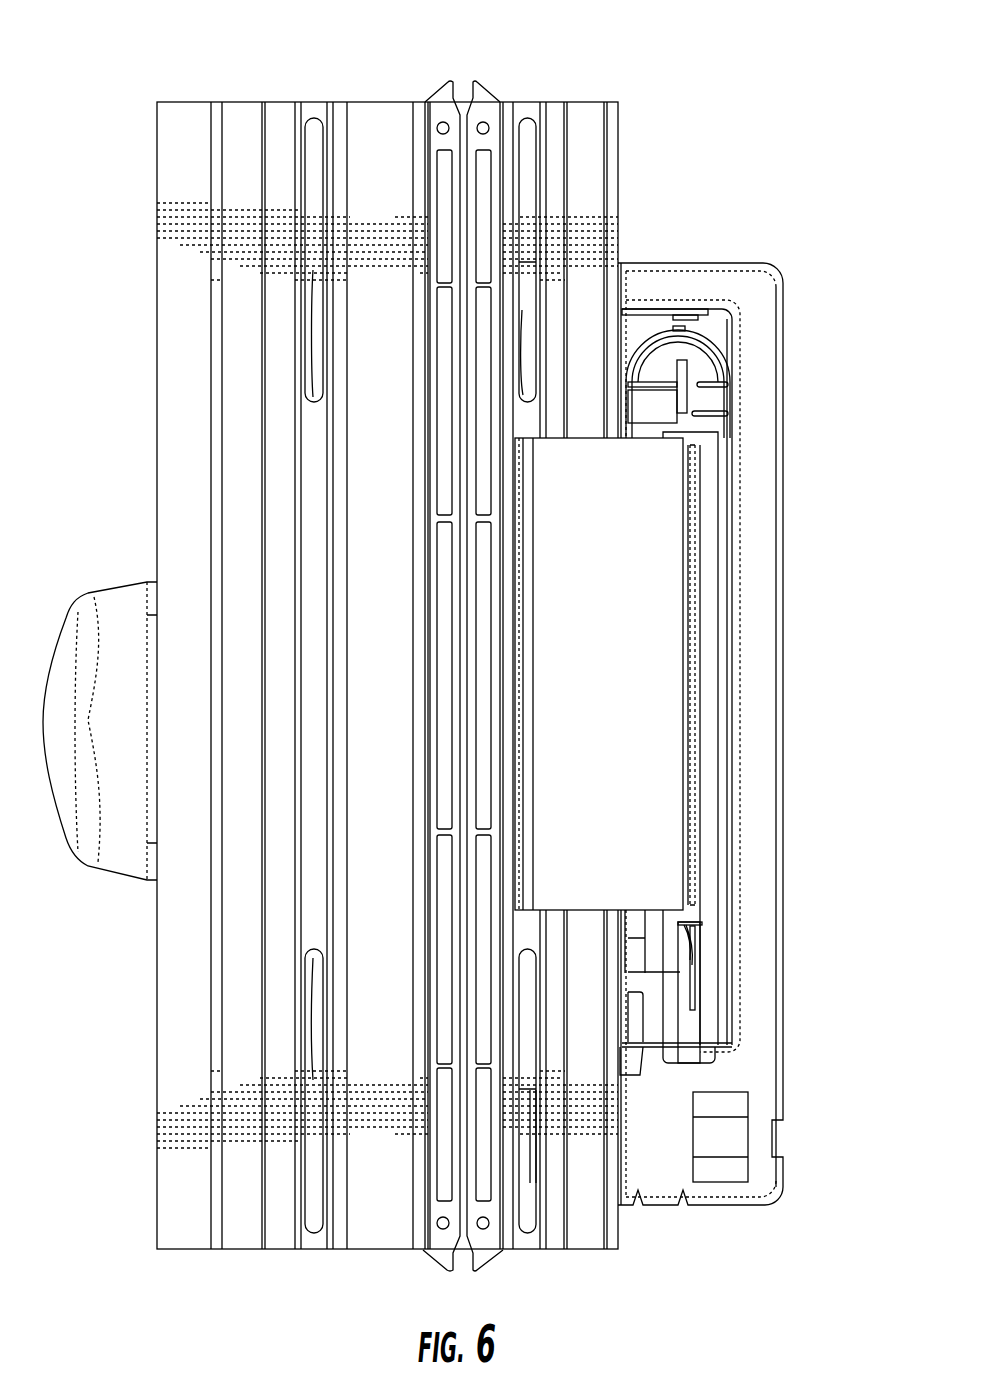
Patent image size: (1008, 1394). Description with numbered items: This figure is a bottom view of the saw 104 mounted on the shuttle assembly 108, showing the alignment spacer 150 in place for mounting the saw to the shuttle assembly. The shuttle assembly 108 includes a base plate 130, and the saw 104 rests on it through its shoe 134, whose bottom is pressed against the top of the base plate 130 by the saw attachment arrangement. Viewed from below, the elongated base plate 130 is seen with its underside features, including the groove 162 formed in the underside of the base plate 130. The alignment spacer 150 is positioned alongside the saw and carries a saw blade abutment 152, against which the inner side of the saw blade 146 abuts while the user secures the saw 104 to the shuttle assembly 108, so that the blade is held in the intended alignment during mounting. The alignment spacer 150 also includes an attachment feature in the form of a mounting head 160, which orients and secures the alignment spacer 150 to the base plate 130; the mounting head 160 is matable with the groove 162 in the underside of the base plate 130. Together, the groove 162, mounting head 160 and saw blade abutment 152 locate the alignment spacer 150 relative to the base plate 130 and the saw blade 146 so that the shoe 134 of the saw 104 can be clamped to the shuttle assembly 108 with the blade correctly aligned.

The shuttle assembly 108 is at (272, 78).
The groove 162 is at (533, 108).
The base plate 130 is at (592, 165).
The saw 104 is at (751, 283).
The shoe 134 is at (768, 695).
The alignment spacer 150 is at (585, 472).
The mounting head 160 is at (528, 522).
The saw blade abutment 152 is at (692, 563).
The saw blade 146 is at (695, 660).